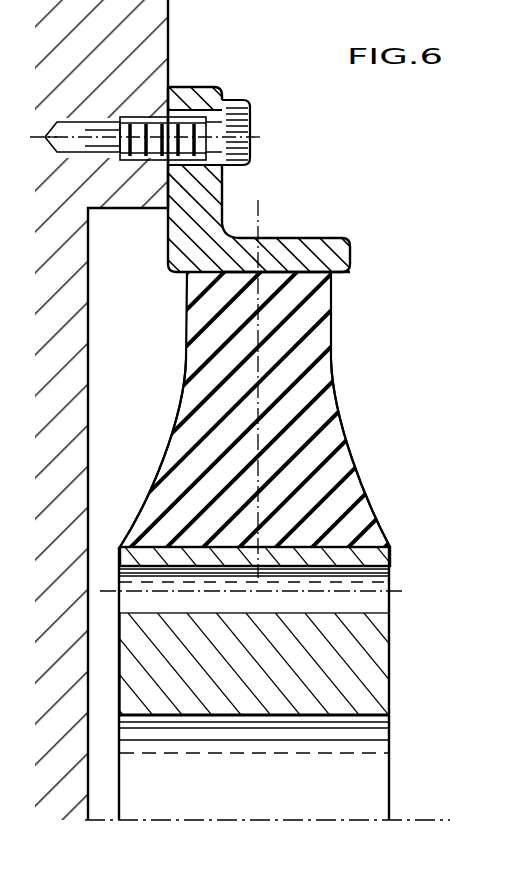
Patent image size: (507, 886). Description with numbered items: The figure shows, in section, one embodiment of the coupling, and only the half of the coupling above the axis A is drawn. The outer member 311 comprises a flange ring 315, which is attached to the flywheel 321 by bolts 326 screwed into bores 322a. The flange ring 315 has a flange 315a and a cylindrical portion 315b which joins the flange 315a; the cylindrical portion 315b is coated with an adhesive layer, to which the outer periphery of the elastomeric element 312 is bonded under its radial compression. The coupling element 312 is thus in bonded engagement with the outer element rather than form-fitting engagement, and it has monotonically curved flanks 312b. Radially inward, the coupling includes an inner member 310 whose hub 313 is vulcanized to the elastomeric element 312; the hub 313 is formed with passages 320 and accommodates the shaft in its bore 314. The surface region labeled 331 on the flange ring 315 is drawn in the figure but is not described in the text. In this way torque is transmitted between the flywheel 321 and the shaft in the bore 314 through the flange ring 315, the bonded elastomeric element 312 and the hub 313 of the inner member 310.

The inner member 310 is at (393, 647).
The outer member 311 is at (229, 86).
The elastomeric element 312 is at (306, 440).
The monotonically curved flanks 312b is at (181, 424).
The hub 313 is at (355, 681).
The bore 314 is at (240, 783).
The flange ring 315 is at (205, 246).
The flange 315a is at (190, 96).
The cylindrical portion 315b is at (331, 256).
The passages 320 is at (370, 583).
The flywheel 321 is at (80, 286).
The bores 322a is at (103, 122).
The bolts 326 is at (250, 126).
The contact face 331 is at (293, 270).
The axis A is at (410, 820).